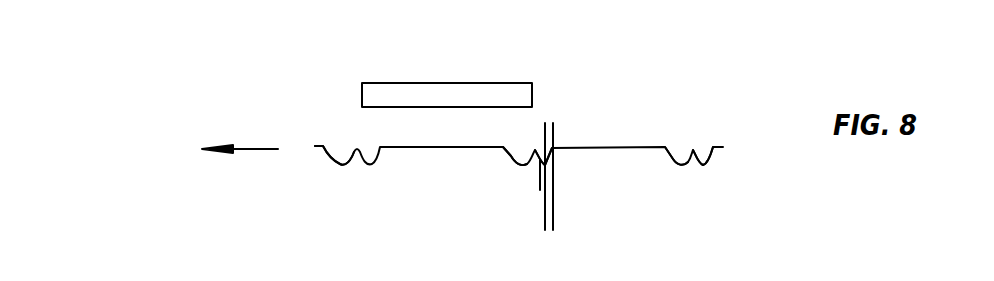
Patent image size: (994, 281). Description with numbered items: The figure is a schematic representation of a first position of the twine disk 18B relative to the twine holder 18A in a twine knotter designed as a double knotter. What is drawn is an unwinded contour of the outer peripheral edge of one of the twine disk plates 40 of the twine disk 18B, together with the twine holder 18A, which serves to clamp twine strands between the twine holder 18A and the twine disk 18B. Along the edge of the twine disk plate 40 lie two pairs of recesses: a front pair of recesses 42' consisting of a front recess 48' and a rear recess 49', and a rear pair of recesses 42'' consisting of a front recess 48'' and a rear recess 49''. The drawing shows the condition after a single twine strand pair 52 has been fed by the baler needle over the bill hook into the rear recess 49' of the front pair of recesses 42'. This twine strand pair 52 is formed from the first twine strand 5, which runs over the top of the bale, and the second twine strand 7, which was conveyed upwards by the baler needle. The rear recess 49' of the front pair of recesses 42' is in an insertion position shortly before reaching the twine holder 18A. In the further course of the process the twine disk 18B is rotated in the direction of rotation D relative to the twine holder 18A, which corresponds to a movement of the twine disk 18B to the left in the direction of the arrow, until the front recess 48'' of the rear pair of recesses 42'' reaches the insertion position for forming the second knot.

The twine disk plate 40 is at (628, 147).
The first twine strand 5 is at (553, 183).
The second twine strand 7 is at (542, 183).
The twine strand pair 52 is at (575, 203).
The twine holder 18A is at (370, 98).
The twine disk 18B is at (319, 150).
The front recess of the front pair of recesses 48' is at (504, 96).
The front pair of recesses 42' is at (573, 52).
The rear recess of the front pair of recesses 49' is at (576, 116).
The front recess of the rear pair of recesses 48'' is at (693, 116).
The rear pair of recesses 42'' is at (743, 59).
The rear recess of the rear pair of recesses 49'' is at (740, 116).
The direction of rotation D is at (222, 154).